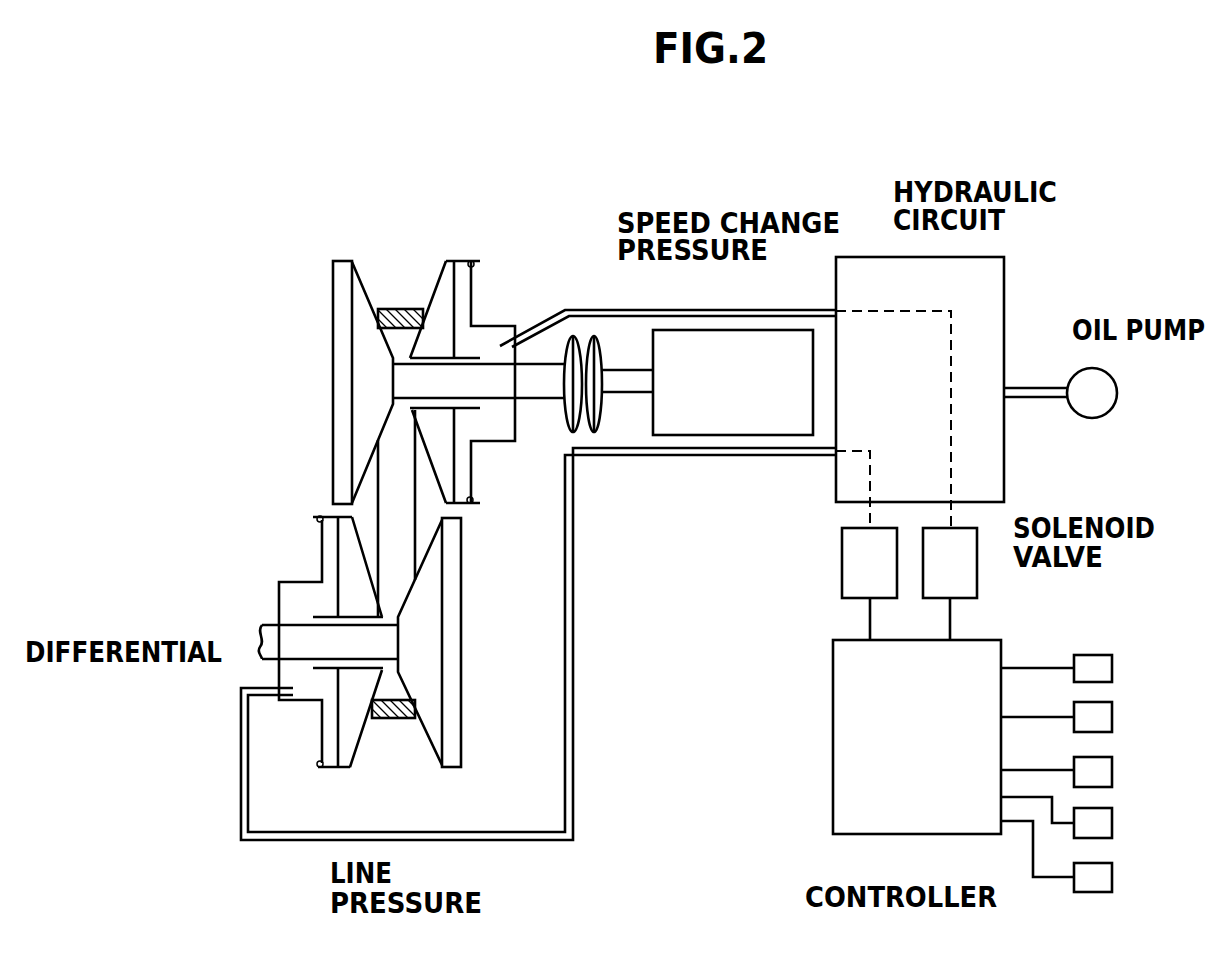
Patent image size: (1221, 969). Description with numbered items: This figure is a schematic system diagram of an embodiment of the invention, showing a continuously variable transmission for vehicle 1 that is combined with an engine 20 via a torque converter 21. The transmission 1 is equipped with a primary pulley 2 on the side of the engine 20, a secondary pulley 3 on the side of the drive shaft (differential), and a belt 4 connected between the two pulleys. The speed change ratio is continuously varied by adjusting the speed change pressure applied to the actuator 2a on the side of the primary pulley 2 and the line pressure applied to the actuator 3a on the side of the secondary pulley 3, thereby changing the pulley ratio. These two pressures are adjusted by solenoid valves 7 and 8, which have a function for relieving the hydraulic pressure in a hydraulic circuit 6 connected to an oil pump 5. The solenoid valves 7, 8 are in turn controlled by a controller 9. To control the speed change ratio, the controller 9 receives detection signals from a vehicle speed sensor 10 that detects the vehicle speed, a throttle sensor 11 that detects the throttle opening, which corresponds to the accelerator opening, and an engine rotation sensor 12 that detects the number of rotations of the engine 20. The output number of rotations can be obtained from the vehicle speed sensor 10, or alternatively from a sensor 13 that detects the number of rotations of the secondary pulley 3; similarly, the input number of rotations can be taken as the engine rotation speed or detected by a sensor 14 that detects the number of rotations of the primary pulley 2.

The continuously variable transmission for vehicle 1 is at (299, 398).
The primary pulley 2 is at (437, 289).
The actuator on the side of the primary pulley 2a is at (484, 336).
The secondary pulley 3 is at (363, 745).
The actuator on the side of the secondary pulley 3a is at (315, 688).
The belt 4 is at (395, 490).
The oil pump 5 is at (1100, 418).
The hydraulic circuit 6 is at (1006, 280).
The solenoid valve 7 is at (977, 585).
The solenoid valve 8 is at (840, 567).
The controller 9 is at (833, 803).
The vehicle speed sensor 10 is at (1113, 668).
The throttle sensor 11 is at (1113, 717).
The engine rotation sensor 12 is at (1113, 771).
The sensor that detects the number of rotations of the secondary pulley 13 is at (1113, 823).
The sensor that detects the number of rotations of the primary pulley 14 is at (1113, 877).
The engine 20 is at (780, 328).
The torque converter 21 is at (593, 338).